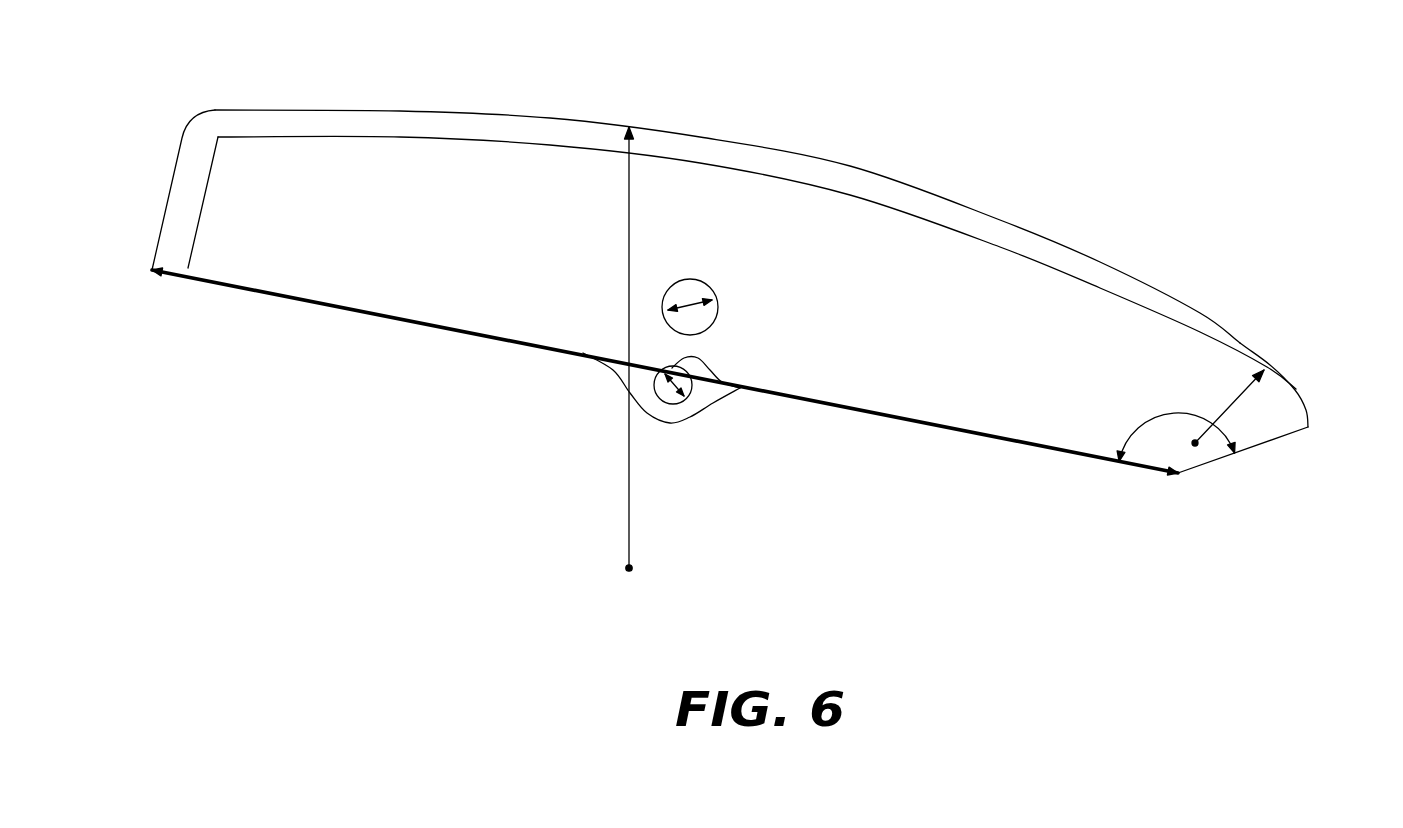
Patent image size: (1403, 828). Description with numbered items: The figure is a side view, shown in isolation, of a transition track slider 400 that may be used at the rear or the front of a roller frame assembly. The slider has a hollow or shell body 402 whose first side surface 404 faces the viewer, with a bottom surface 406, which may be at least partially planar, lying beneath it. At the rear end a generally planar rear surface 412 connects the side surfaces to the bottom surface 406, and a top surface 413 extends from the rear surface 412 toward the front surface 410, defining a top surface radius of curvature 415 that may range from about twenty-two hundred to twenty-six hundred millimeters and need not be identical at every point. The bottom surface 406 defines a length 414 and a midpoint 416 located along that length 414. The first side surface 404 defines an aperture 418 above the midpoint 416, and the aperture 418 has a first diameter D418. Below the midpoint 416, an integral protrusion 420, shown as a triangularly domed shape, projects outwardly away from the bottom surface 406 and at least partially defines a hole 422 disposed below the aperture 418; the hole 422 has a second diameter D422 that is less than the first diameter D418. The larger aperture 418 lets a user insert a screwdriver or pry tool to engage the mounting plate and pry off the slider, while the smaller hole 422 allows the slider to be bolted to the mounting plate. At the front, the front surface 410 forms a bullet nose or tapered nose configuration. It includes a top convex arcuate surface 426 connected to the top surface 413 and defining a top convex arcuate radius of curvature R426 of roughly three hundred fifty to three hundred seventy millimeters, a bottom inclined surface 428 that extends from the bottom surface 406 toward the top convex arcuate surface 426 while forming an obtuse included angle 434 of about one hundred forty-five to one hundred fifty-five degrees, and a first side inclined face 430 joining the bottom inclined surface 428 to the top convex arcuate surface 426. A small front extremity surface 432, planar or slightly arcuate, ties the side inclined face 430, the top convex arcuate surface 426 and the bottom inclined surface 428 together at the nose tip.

The transition track slider 400 is at (806, 103).
The hollow body 402 is at (897, 175).
The first side surface 404 is at (912, 331).
The bottom surface 406 is at (958, 431).
The front surface 410 is at (1300, 438).
The rear surface 412 is at (169, 196).
The top surface 413 is at (581, 116).
The length 414 is at (740, 388).
The top surface radius of curvature 415 is at (629, 535).
The midpoint 416 is at (680, 382).
The aperture 418 is at (686, 280).
The first diameter D418 is at (695, 299).
The integral protrusion 420 is at (705, 423).
The hole 422 is at (680, 406).
The second diameter D422 is at (663, 404).
The top convex arcuate surface 426 is at (1270, 345).
The top convex arcuate radius of curvature R426 is at (1240, 428).
The bottom inclined surface 428 is at (1277, 443).
The first side inclined face 430 is at (1263, 408).
The front extremity surface 432 is at (1308, 418).
The obtuse included angle 434 is at (1162, 413).